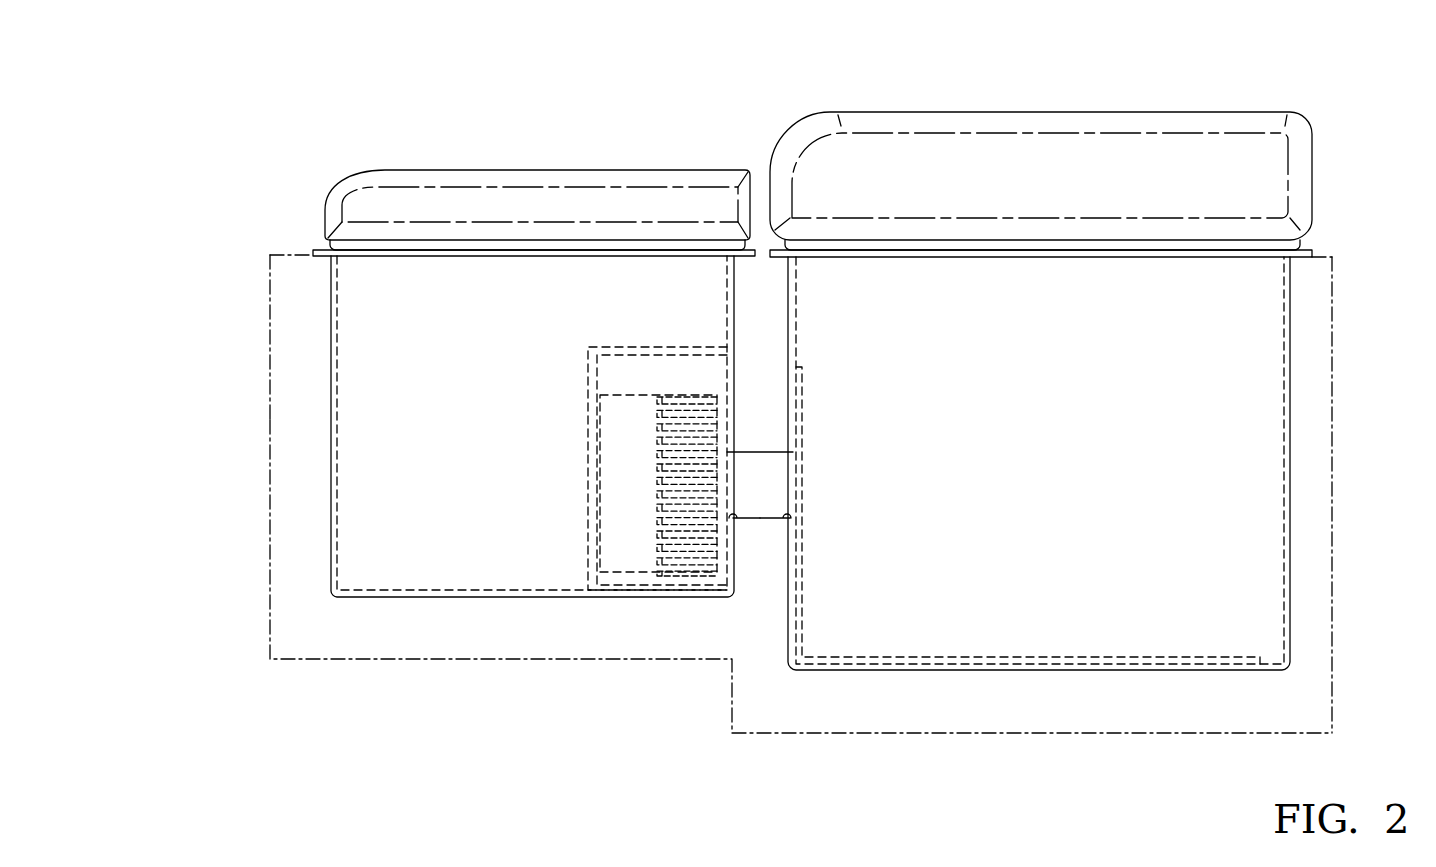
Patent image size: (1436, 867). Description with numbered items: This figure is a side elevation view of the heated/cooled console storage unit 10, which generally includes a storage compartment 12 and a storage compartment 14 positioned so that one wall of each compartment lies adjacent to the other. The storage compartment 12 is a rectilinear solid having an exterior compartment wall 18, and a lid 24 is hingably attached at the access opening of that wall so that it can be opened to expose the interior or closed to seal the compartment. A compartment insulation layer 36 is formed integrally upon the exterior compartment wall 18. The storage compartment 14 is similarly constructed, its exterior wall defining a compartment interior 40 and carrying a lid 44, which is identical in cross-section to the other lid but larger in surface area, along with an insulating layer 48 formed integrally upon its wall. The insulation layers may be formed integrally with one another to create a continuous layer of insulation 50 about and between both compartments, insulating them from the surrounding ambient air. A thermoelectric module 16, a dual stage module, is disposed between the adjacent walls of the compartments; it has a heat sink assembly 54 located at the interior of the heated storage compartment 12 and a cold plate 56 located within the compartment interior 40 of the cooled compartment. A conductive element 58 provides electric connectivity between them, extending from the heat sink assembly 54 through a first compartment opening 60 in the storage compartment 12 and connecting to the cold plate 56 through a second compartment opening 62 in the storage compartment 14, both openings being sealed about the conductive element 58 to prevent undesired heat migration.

The heated/cooled console storage unit 10 is at (340, 87).
The storage compartment 12 is at (326, 562).
The storage compartment 14 is at (1292, 440).
The thermoelectric module 16 is at (652, 570).
The exterior compartment wall 18 is at (331, 421).
The lid 24 is at (340, 182).
The compartment insulation layer 36 is at (284, 302).
The compartment interior 40 is at (1213, 340).
The lid 44 is at (1213, 112).
The insulating layer 48 is at (1297, 712).
The continuous layer of insulation 50 is at (268, 517).
The heat sink assembly 54 is at (588, 517).
The cold plate 56 is at (1218, 657).
The conductive element 58 is at (773, 452).
The first compartment opening 60 is at (733, 522).
The second compartment opening 62 is at (787, 522).